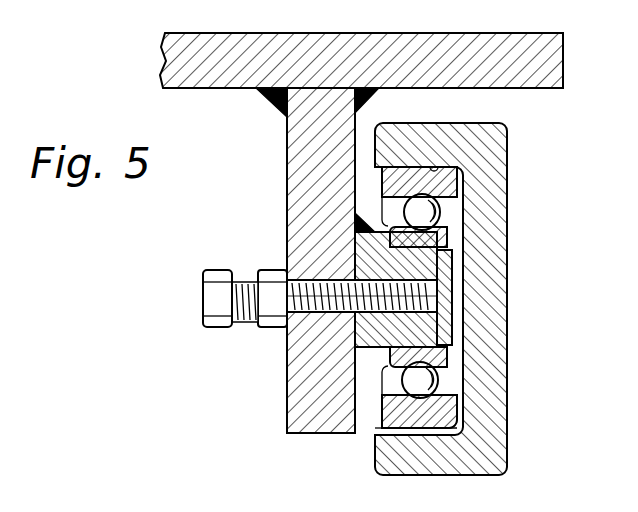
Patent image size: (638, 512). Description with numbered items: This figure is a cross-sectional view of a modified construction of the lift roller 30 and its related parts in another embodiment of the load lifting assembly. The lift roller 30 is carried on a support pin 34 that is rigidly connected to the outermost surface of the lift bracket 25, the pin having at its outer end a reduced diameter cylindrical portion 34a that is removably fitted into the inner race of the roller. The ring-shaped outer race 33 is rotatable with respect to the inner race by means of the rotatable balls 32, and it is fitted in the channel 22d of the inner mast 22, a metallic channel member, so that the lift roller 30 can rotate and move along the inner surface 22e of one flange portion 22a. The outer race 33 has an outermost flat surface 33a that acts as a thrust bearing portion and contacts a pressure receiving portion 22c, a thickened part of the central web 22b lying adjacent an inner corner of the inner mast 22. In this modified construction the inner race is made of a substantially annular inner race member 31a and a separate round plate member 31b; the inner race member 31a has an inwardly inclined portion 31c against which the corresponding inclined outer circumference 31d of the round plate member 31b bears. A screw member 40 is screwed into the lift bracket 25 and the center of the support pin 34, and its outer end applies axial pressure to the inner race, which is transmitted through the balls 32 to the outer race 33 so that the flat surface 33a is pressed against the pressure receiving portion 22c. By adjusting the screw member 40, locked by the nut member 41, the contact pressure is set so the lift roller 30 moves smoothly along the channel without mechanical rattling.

The inner mast 22 is at (507, 143).
The flange portion 22a is at (395, 138).
The central web 22b is at (487, 292).
The pressure receiving portion 22c is at (470, 438).
The channel 22d is at (440, 472).
The inner surface 22e is at (434, 167).
The lift bracket 25 is at (295, 173).
The lift roller 30 is at (376, 426).
The inner race member 31a is at (452, 240).
The round plate member 31b is at (452, 322).
The inwardly inclined portion 31c is at (450, 270).
The inclined outer circumference 31d is at (446, 344).
The balls 32 is at (460, 186).
The outer race 33 is at (416, 422).
The flat surface 33a is at (457, 458).
The support pin 34 is at (440, 216).
The reduced diameter cylindrical portion 34a is at (440, 381).
The screw member 40 is at (225, 328).
The nut member 41 is at (267, 328).